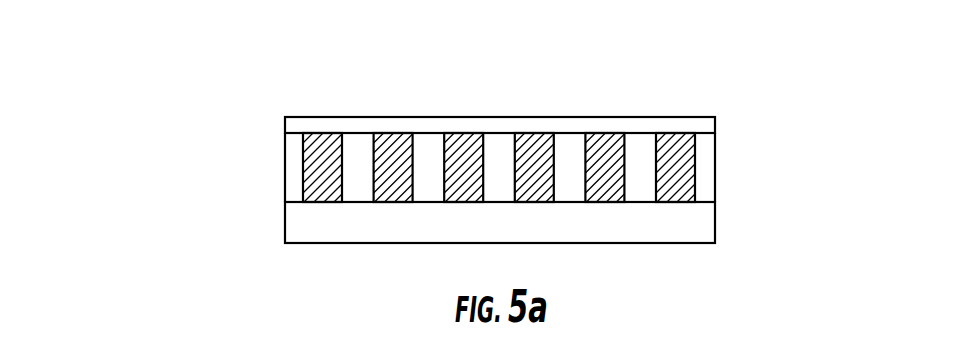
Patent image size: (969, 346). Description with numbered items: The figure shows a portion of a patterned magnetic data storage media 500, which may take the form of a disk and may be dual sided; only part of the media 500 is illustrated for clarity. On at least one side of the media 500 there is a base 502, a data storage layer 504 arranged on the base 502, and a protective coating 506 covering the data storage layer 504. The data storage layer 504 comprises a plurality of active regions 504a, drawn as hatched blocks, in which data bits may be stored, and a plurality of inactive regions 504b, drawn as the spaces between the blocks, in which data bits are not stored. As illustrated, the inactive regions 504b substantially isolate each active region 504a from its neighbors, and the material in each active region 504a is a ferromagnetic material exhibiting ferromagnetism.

The patterned magnetic data storage media 500 is at (160, 170).
The base 502 is at (697, 232).
The data storage layer 504 is at (260, 113).
The active region 504a is at (683, 143).
The inactive region 504b is at (577, 180).
The protective coating 506 is at (717, 123).